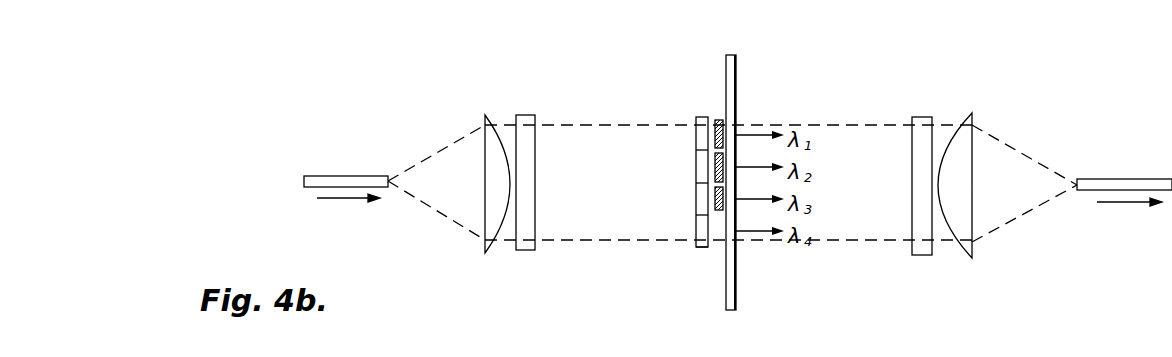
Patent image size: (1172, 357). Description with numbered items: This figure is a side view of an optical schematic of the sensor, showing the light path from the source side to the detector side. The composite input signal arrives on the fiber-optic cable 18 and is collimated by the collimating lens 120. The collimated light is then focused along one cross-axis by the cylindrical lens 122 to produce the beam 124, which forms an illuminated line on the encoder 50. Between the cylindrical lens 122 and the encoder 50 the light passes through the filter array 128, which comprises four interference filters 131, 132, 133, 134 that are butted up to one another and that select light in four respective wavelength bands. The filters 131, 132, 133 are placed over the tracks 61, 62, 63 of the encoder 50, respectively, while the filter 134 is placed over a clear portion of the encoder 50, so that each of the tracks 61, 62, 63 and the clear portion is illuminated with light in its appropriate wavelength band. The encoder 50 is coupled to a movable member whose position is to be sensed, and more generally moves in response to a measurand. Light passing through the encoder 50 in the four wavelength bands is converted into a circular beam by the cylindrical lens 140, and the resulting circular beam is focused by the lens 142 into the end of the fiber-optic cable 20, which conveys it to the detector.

The fiber-optic cable 18 is at (365, 176).
The fiber-optic cable 20 is at (1105, 179).
The encoder 50 is at (736, 58).
The track 61 is at (720, 119).
The track 62 is at (716, 182).
The track 63 is at (721, 212).
The collimating lens 120 is at (485, 124).
The cylindrical lens 122 is at (528, 118).
The beam 124 is at (593, 123).
The filter array 128 is at (698, 111).
The interference filter 131 is at (697, 119).
The interference filter 132 is at (697, 151).
The interference filter 133 is at (697, 188).
The interference filter 134 is at (697, 228).
The cylindrical lens 140 is at (924, 117).
The lens 142 is at (972, 118).